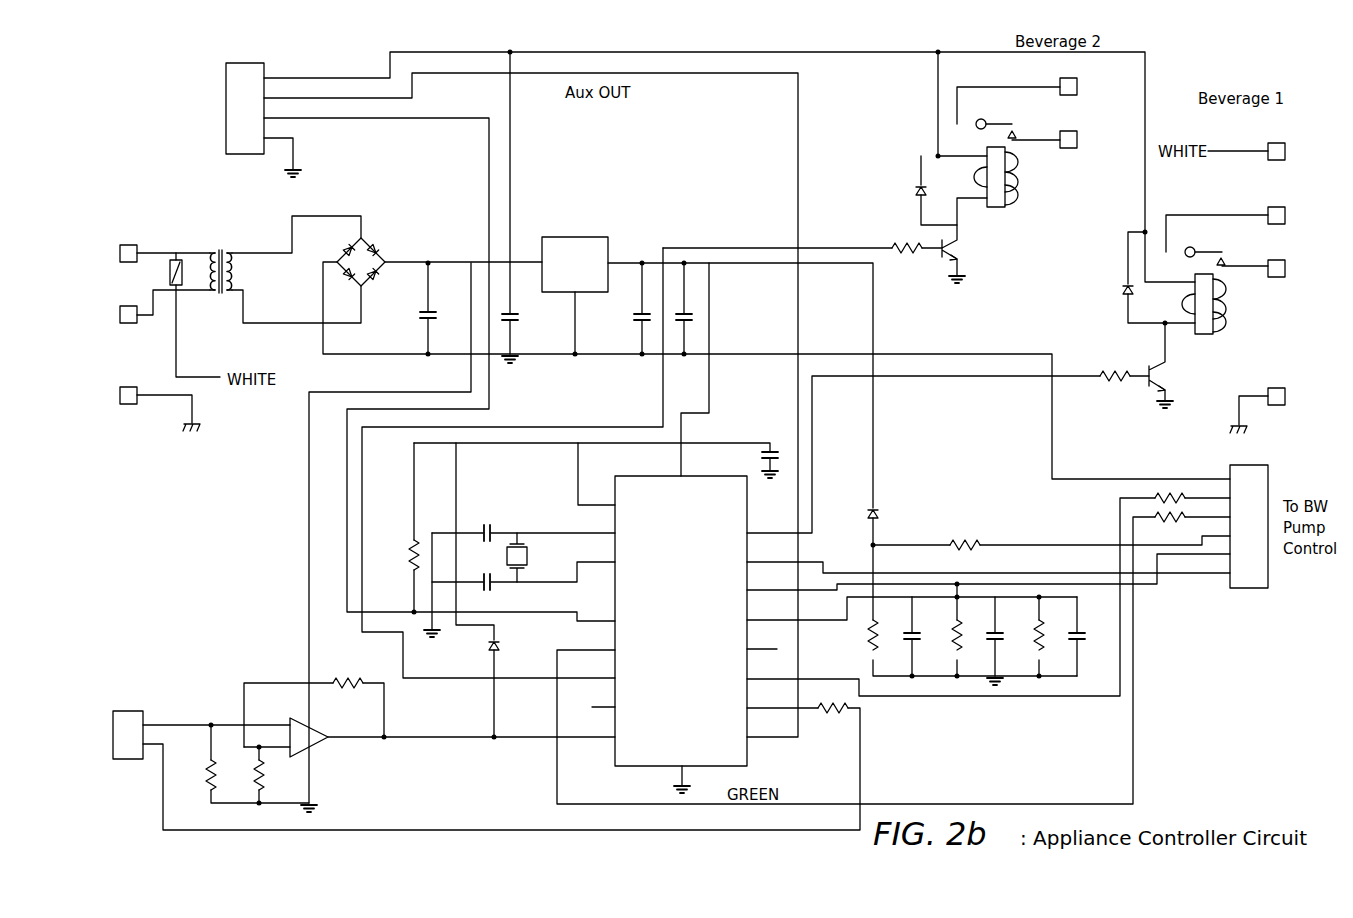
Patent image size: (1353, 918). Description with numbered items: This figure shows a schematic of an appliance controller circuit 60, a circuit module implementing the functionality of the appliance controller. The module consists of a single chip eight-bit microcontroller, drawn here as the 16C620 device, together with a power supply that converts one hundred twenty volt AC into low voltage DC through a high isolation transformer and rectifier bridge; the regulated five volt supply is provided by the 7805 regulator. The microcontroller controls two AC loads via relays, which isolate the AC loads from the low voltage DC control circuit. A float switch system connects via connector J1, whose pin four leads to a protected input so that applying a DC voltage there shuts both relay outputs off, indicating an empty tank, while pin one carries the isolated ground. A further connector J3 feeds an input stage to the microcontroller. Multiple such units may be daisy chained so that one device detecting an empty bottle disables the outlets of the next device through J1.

The appliance controller circuit 60 is at (163, 63).
The voltage regulator 7805 is at (597, 248).
The microcontroller 16C620 is at (685, 621).
The connector J1 is at (1249, 517).
The connector J3 is at (128, 725).